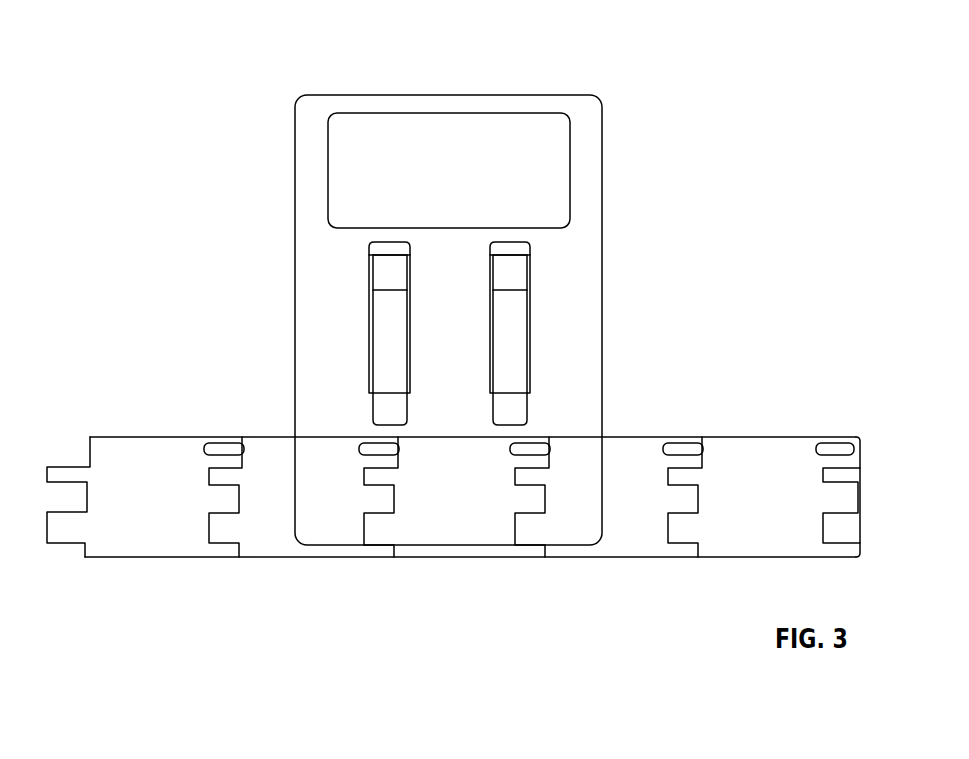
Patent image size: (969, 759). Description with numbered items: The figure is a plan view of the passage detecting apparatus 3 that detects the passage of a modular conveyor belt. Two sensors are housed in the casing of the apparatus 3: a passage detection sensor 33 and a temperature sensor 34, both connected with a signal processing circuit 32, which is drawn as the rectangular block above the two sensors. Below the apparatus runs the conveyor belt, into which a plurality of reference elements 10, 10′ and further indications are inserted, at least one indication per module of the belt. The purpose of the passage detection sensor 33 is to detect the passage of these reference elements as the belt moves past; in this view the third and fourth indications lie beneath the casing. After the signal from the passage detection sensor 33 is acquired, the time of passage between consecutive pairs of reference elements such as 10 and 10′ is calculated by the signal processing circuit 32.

The passage detecting apparatus 3 is at (603, 100).
The signal processing circuit 32 is at (449, 170).
The passage detection sensor 33 is at (380, 330).
The temperature sensor 34 is at (508, 325).
The reference element 10 is at (837, 447).
The reference element 10′ is at (692, 446).